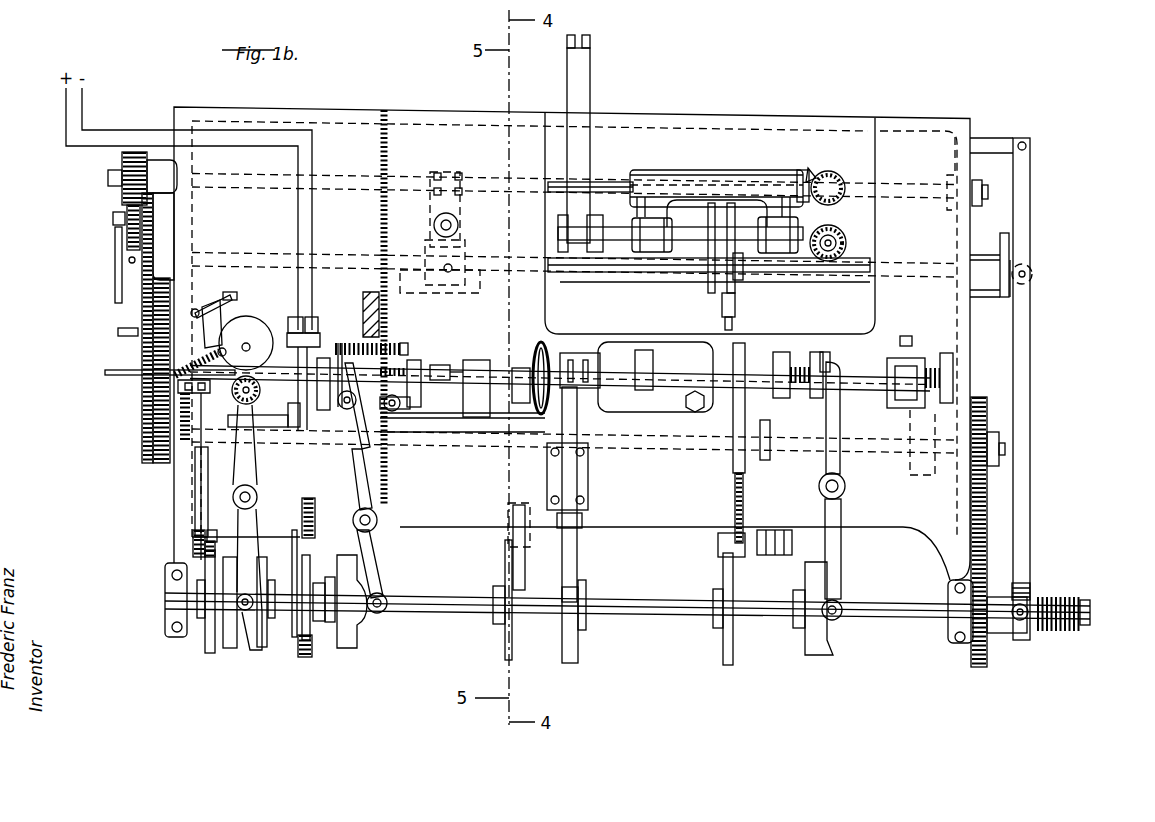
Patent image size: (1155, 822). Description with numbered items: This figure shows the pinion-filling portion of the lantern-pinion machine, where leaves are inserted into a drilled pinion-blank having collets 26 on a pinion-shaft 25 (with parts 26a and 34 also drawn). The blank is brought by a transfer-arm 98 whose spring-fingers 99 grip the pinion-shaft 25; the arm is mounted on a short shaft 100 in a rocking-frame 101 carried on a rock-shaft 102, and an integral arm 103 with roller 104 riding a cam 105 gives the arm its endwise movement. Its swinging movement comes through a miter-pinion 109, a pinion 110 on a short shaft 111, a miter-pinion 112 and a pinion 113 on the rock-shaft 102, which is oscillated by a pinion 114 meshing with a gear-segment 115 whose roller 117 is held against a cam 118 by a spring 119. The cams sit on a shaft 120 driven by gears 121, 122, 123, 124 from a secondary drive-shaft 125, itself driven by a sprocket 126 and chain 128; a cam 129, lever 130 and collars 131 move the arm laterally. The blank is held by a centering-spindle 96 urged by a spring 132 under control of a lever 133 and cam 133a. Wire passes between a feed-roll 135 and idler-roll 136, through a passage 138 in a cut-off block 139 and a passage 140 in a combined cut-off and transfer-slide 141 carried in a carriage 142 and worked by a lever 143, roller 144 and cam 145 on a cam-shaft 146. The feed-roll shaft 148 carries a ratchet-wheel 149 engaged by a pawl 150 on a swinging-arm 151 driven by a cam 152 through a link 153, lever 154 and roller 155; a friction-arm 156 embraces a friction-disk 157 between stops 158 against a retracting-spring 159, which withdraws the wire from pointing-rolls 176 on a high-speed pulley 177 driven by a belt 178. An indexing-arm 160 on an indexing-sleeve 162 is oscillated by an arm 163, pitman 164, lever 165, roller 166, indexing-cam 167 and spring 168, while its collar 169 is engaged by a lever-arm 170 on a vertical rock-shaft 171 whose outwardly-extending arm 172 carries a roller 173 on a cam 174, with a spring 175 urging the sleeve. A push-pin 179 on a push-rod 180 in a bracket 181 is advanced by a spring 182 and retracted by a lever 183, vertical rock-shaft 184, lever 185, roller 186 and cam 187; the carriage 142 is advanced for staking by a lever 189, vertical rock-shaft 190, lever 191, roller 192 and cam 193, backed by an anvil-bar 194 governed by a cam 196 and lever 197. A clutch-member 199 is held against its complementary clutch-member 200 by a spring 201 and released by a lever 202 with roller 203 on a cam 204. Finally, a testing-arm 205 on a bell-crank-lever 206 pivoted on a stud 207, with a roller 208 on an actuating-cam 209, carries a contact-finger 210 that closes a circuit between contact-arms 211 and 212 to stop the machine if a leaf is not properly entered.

The pinion-shaft 25 is at (590, 370).
The collets 26 is at (571, 362).
The arm extension 26a is at (586, 365).
The bar 34 is at (140, 372).
The centering-spindle 96 is at (862, 385).
The transfer-arm 98 is at (585, 90).
The spring-fingers 99 is at (591, 46).
The short shaft 100 is at (616, 228).
The rocking-frame 101 is at (615, 250).
The rock-shaft 102 is at (607, 182).
The integral arm 103 is at (722, 300).
The roller 104 is at (785, 322).
The cam 105 is at (745, 296).
The miter-pinion 109 is at (752, 268).
The pinion 110 is at (834, 246).
The short shaft 111 is at (875, 280).
The miter-pinion 112 is at (832, 172).
The pinion 113 is at (814, 172).
The pinion 114 is at (122, 200).
The gear-segment 115 is at (127, 250).
The roller 117 is at (113, 220).
The cam 118 is at (115, 300).
The spring 119 is at (125, 325).
The shaft 120 is at (235, 258).
The gear 121 is at (123, 333).
The gear 122 is at (140, 382).
The gear 123 is at (153, 400).
The gear 124 is at (158, 462).
The secondary drive-shaft 125 is at (997, 450).
The sprocket 126 is at (386, 465).
The chain 128 is at (388, 130).
The cam 129 is at (465, 238).
The lever 130 is at (444, 213).
The collars 131 is at (457, 182).
The spring 132 is at (950, 375).
The lever 133 is at (905, 360).
The cam 133a is at (918, 482).
The feed-roll 135 is at (250, 410).
The idler-roll 136 is at (252, 330).
The passage 138 is at (495, 370).
The cut-off block 139 is at (502, 403).
The passage 140 is at (515, 385).
The combined leaf cut-off and transfer-slide 141 is at (515, 382).
The carriage 142 is at (435, 412).
The lever 143 is at (500, 565).
The roller 144 is at (515, 630).
The cam 145 is at (509, 660).
The cam-shaft 146 is at (668, 612).
The shaft 148 is at (355, 430).
The ratchet-wheel 149 is at (222, 462).
The pawl 150 is at (252, 348).
The swinging-arm 151 is at (200, 475).
The cam 152 is at (209, 655).
The link 153 is at (190, 560).
The lever 154 is at (207, 553).
The roller 155 is at (205, 560).
The friction-arm 156 is at (262, 292).
The friction-disk 157 is at (237, 402).
The stops 158 is at (215, 300).
The retracting-spring 159 is at (175, 362).
The indexing-arm 160 is at (573, 350).
The indexing-sleeve 162 is at (722, 383).
The arm 163 is at (738, 400).
The adjustable pitman 164 is at (764, 445).
The lever 165 is at (737, 518).
The roller 166 is at (718, 545).
The indexing-cam 167 is at (727, 668).
The spring 168 is at (765, 528).
The collar 169 is at (828, 362).
The lever-arm 170 is at (840, 460).
The vertical rock-shaft 171 is at (838, 487).
The outwardly-extending arm 172 is at (841, 548).
The roller 173 is at (840, 615).
The cam 174 is at (814, 652).
The spring 175 is at (800, 400).
The pointing-rolls 176 is at (525, 275).
The high-speed pulley 177 is at (540, 345).
The belt 178 is at (580, 420).
The push-pin 179 is at (490, 372).
The push-rod 180 is at (400, 320).
The bracket 181 is at (415, 362).
The spring 182 is at (398, 346).
The lever 183 is at (384, 500).
The vertical rock-shaft 184 is at (390, 533).
The lever 185 is at (505, 565).
The roller 186 is at (382, 620).
The cam 187 is at (352, 612).
The lever 189 is at (257, 497).
The vertical rock-shaft 190 is at (226, 525).
The lever 191 is at (252, 548).
The roller 192 is at (250, 653).
The cam 193 is at (256, 652).
The anvil-bar 194 is at (570, 430).
The cam 196 is at (590, 655).
The lever 197 is at (552, 560).
The clutch-member 199 is at (1028, 595).
The clutch-member 200 is at (990, 632).
The spring 201 is at (1060, 598).
The lever 202 is at (1028, 500).
The roller 203 is at (1032, 276).
The cam 204 is at (1010, 245).
The testing-arm 205 is at (313, 335).
The bell-crank-lever 206 is at (294, 650).
The stud 207 is at (312, 540).
The roller 208 is at (312, 650).
The actuating-cam 209 is at (352, 652).
The contact-finger 210 is at (302, 425).
The contact-arm 211 is at (300, 320).
The contact-arm 212 is at (308, 334).